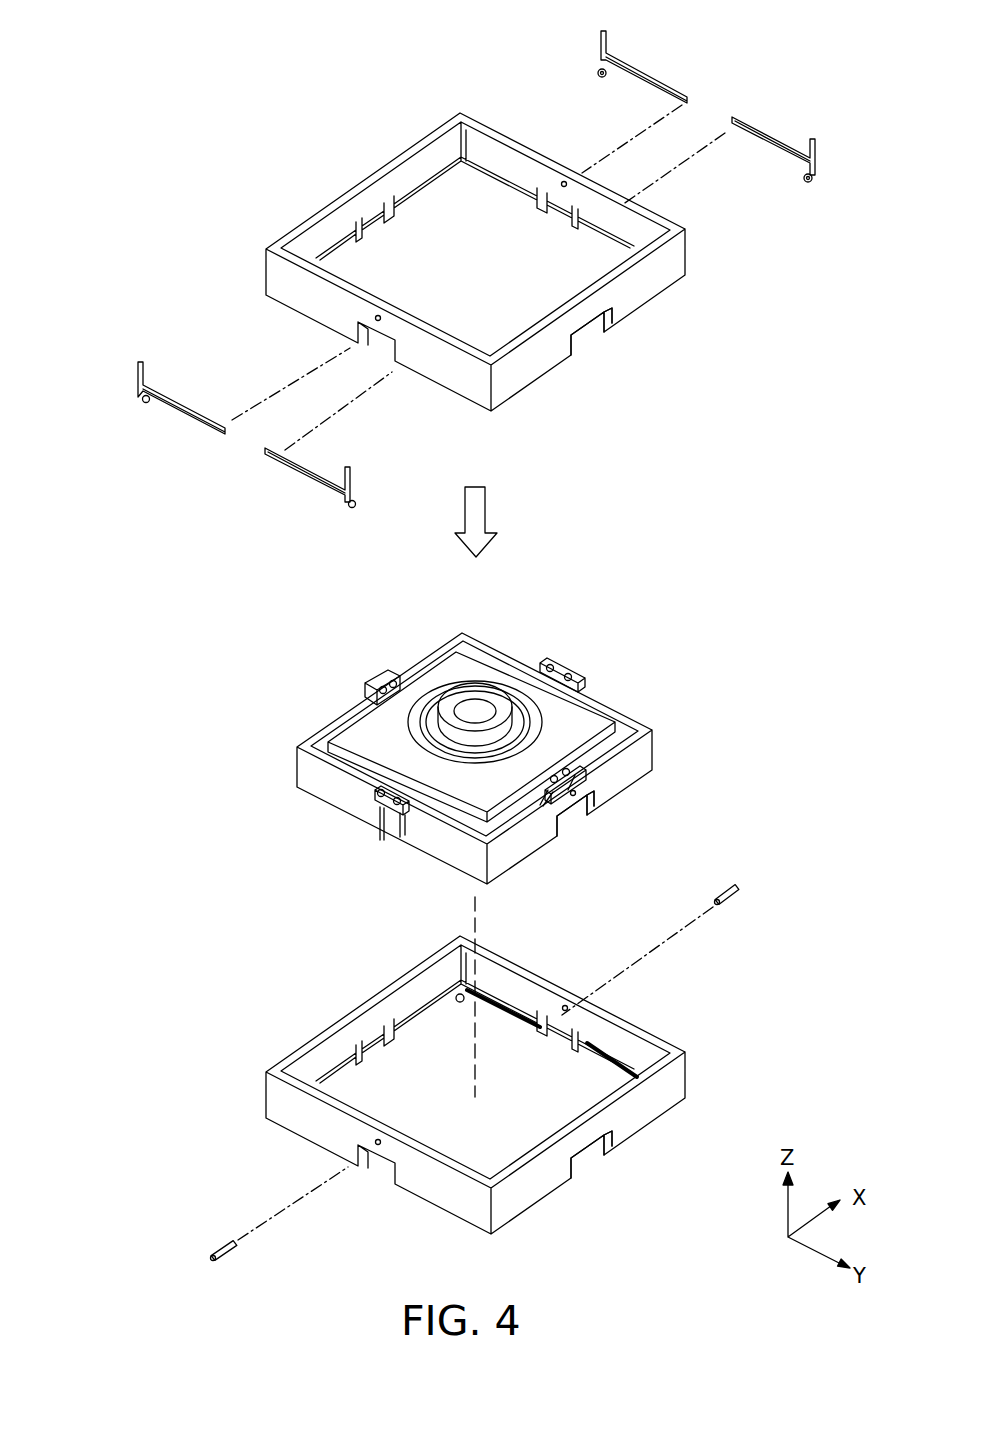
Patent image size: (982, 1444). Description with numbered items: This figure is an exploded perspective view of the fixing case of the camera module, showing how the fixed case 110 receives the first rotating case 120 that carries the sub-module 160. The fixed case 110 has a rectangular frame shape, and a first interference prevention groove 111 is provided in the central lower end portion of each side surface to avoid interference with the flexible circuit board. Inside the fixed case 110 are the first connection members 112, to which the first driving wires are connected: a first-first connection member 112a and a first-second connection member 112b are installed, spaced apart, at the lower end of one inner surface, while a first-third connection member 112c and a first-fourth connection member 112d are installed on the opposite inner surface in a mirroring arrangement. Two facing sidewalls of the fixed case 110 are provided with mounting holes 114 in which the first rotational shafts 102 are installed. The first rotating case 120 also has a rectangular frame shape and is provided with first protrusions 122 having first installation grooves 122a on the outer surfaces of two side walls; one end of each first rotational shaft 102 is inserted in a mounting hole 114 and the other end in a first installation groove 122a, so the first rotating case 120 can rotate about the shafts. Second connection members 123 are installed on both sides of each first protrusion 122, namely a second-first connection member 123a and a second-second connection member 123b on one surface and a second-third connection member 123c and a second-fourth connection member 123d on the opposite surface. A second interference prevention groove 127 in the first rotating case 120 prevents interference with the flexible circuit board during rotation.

The first rotational shaft 102 is at (740, 886).
The fixed case 110 is at (660, 277).
The first interference prevention groove 111 is at (588, 333).
The first connection member 112 is at (124, 72).
The 1-1 connection member 112a is at (148, 450).
The 1-2 connection member 112b is at (285, 525).
The 1-3 connection member 112c is at (510, 1000).
The 1-4 connection member 112d is at (613, 1057).
The mounting hole 114 is at (563, 182).
The first rotating case 120 is at (618, 773).
The first protrusion 122 is at (375, 790).
The first installation groove 122a is at (383, 806).
The second connection member 123 is at (124, 828).
The 2-1 connection member 123a is at (376, 794).
The 2-2 connection member 123b is at (393, 806).
The 2-3 connection member 123c is at (540, 616).
The 2-4 connection member 123d is at (633, 668).
The second interference prevention groove 127 is at (573, 821).
The sub-module 160 is at (430, 680).